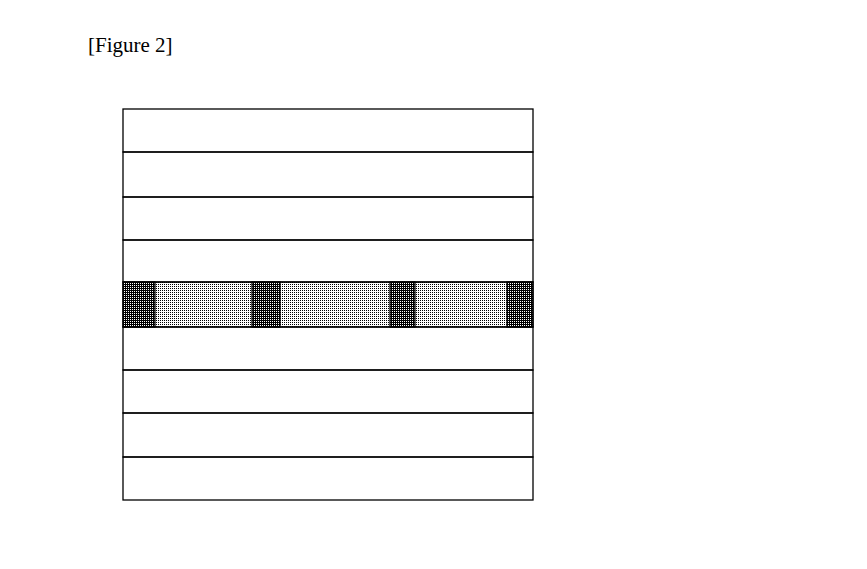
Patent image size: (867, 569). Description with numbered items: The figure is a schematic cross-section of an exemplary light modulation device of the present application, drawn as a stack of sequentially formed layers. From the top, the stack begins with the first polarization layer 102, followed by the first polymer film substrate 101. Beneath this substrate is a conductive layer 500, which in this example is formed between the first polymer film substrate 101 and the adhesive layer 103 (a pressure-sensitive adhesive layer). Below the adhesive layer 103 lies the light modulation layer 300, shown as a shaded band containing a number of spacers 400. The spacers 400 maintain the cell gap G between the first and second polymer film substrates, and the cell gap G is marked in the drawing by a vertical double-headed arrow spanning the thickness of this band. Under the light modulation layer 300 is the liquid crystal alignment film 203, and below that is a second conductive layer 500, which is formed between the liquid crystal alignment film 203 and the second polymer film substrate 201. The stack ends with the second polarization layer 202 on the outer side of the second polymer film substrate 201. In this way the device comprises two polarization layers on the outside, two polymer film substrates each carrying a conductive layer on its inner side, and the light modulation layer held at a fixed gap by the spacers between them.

The first polarization layer 102 is at (328, 130).
The first polymer film substrate 101 is at (328, 174).
The conductive layer 500 is at (328, 305).
The adhesive layer 103 is at (328, 261).
The liquid crystal alignment film 203 is at (328, 348).
The second polymer film substrate 201 is at (328, 435).
The second polarization layer 202 is at (328, 478).
The light modulation layer 300 is at (458, 303).
The spacers 400 is at (515, 308).
The cell gap G is at (305, 283).